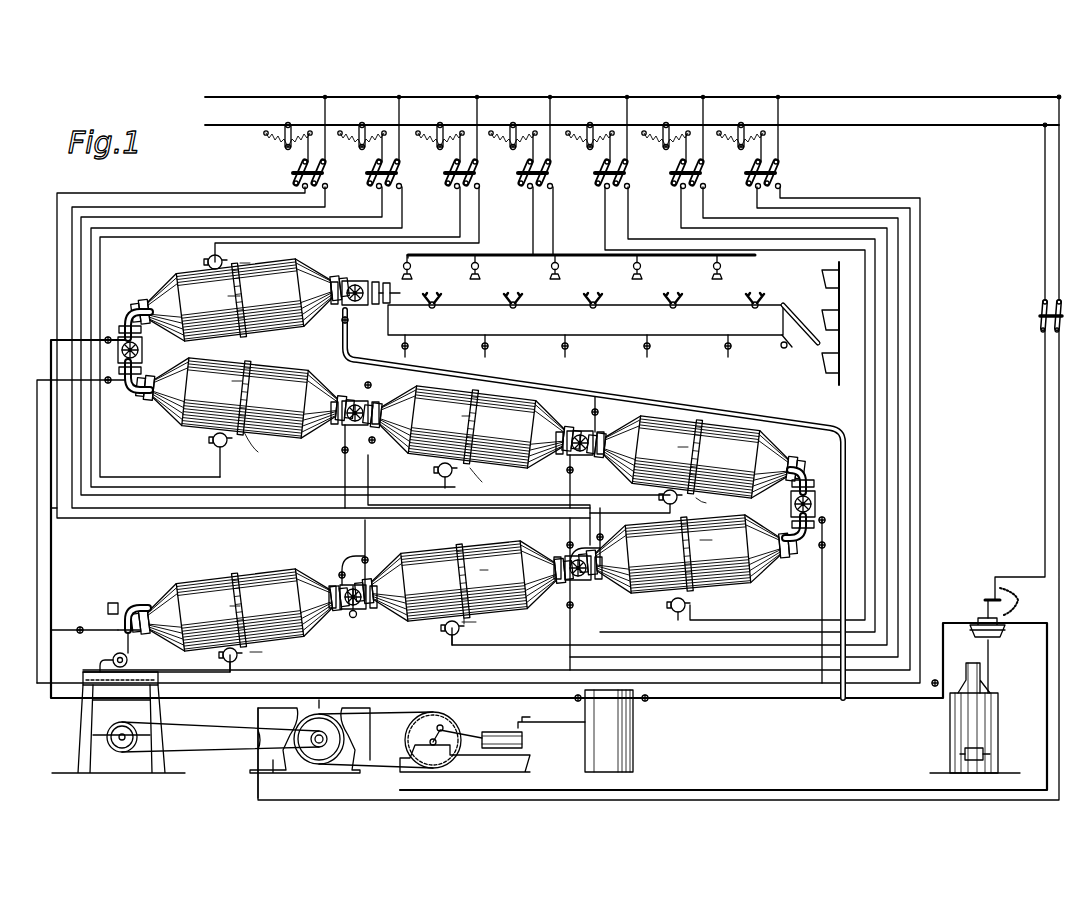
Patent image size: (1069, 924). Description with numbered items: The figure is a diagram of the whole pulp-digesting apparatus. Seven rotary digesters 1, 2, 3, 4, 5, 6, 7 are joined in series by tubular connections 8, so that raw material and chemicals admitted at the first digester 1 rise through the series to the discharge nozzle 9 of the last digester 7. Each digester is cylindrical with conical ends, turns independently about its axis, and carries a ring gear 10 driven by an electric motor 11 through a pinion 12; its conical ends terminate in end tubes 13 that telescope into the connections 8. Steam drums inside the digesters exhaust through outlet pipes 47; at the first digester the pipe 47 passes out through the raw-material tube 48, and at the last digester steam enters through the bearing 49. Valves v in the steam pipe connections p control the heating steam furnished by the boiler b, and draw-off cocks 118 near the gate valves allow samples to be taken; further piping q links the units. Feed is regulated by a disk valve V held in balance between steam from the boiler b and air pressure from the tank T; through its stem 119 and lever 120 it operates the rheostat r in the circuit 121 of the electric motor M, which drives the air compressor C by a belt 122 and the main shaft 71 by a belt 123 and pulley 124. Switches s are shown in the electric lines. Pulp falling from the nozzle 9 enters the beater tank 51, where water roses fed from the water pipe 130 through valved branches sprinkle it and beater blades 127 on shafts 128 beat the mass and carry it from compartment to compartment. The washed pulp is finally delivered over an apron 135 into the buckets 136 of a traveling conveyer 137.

The rotary digester 1 is at (239, 610).
The rotary digester 2 is at (464, 581).
The rotary digester 3 is at (688, 554).
The rotary digester 4 is at (695, 457).
The rotary digester 5 is at (471, 427).
The rotary digester 6 is at (245, 398).
The rotary digester 7 is at (239, 300).
The tubular connection 8 is at (140, 350).
The discharge nozzle 9 is at (392, 282).
The ring gear 10 is at (442, 451).
The electric motor 11 is at (207, 258).
The pinion 12 is at (482, 460).
The end tube 13 is at (710, 542).
The outlet pipe 47 is at (372, 606).
The raw-material tube 48 is at (136, 612).
The bearing 49 is at (355, 281).
The beater tank 51 is at (583, 325).
The main shaft 71 is at (106, 734).
The draw-off pipe and cock 118 is at (138, 628).
The valve stem 119 is at (984, 607).
The lever 120 is at (985, 598).
The circuit 121 is at (1057, 508).
The belt 122 is at (400, 725).
The belt 123 is at (216, 749).
The pulley 124 is at (120, 750).
The beater blade 127 is at (521, 291).
The shaft 128 is at (603, 326).
The water pipe 130 is at (578, 255).
The apron 135 is at (808, 305).
The bucket 136 is at (822, 316).
The traveling conveyer 137 is at (822, 350).
The switch s is at (364, 171).
The valve v is at (80, 626).
The rheostat r is at (727, 441).
The steam pipe connection p is at (37, 575).
The pipe q is at (53, 578).
The electric motor M is at (310, 749).
The air compressor C is at (520, 752).
The tank T is at (633, 742).
The boiler b is at (952, 737).
The disk valve V is at (998, 630).